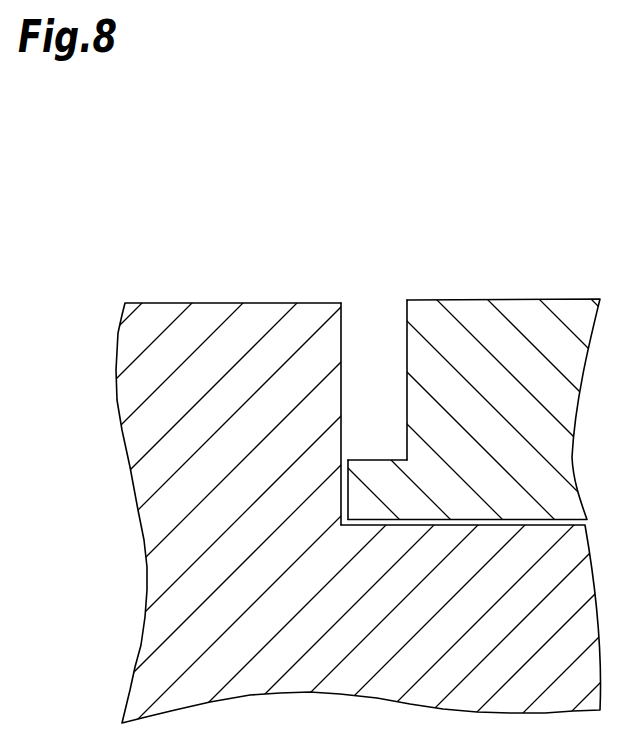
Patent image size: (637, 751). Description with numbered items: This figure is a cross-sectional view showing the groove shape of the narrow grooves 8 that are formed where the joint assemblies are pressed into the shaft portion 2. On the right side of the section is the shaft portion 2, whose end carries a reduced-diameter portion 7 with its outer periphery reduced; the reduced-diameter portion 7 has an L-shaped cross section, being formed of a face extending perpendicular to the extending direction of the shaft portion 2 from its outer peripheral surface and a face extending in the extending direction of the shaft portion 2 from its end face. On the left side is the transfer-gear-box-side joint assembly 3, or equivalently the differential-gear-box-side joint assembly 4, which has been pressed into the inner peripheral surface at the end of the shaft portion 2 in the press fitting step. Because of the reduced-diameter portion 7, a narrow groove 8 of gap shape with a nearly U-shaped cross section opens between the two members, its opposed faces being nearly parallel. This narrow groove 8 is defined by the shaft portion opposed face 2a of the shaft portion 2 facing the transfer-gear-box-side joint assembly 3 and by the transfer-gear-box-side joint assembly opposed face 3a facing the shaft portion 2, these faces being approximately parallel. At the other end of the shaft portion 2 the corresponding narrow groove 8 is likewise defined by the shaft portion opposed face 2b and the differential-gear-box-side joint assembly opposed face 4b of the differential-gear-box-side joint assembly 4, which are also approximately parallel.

The shaft portion 2 is at (562, 310).
The shaft portion opposed face 2a is at (444, 351).
The shaft portion opposed face 2b is at (407, 344).
The transfer-gear-box-side joint assembly 3 is at (318, 494).
The differential-gear-box-side joint assembly 4 is at (160, 322).
The transfer-gear-box-side joint assembly opposed face 3a is at (313, 383).
The differential-gear-box-side joint assembly opposed face 4b is at (341, 346).
The reduced-diameter portion 7 is at (380, 457).
The narrow groove 8 is at (380, 314).